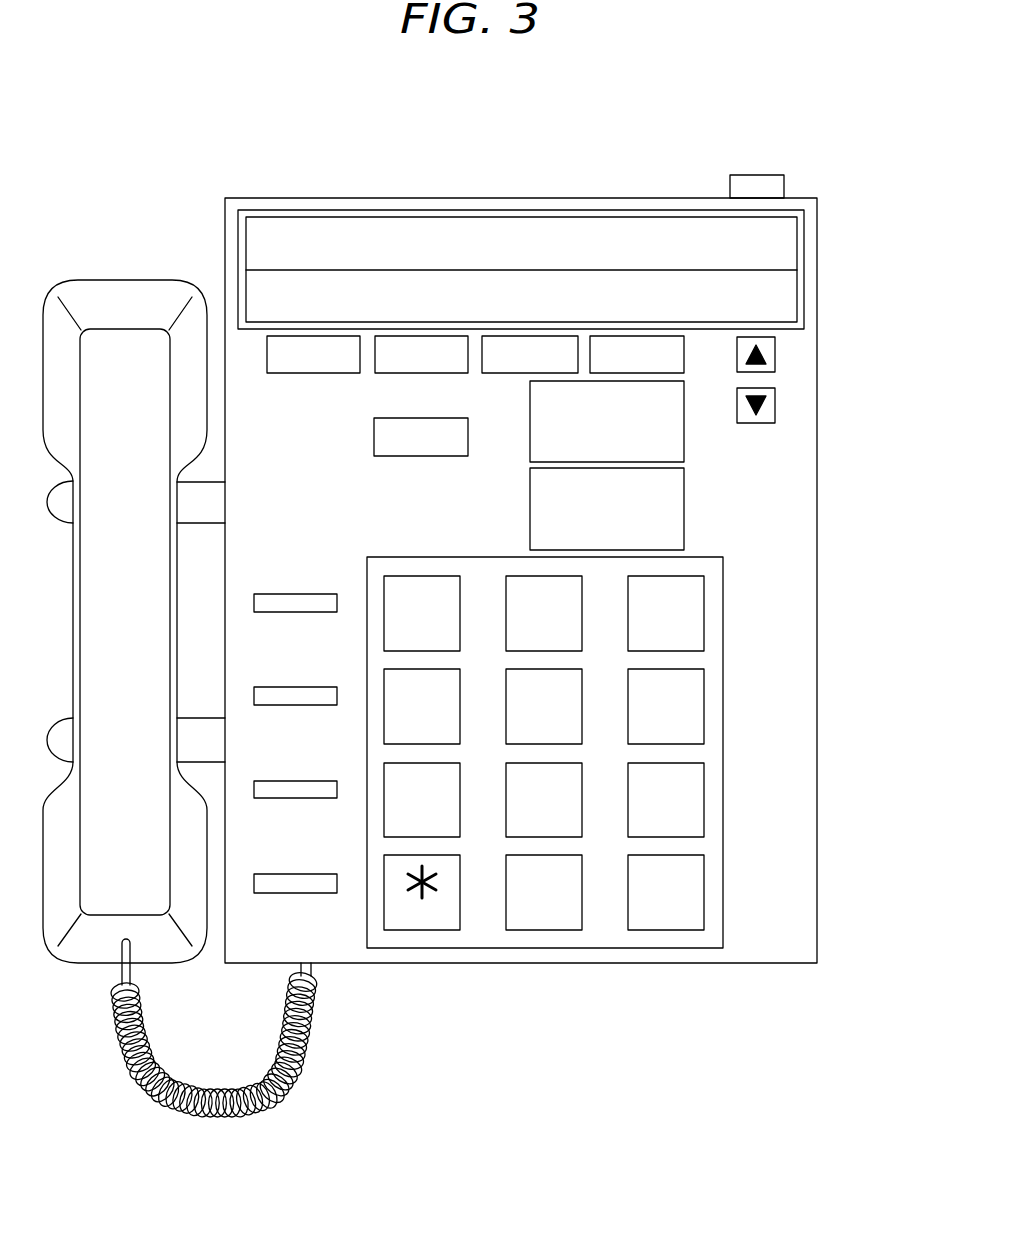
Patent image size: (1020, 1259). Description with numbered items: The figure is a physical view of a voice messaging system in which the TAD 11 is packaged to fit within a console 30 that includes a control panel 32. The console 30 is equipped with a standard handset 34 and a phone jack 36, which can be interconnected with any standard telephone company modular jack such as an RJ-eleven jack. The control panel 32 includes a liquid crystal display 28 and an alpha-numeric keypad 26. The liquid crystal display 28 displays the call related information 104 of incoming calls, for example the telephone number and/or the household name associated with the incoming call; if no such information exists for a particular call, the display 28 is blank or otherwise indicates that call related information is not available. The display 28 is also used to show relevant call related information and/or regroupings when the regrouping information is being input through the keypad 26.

The TAD 11 is at (790, 899).
The alpha-numeric keypad 26 is at (723, 712).
The liquid crystal display 28 is at (520, 213).
The console 30 is at (818, 611).
The control panel 32 is at (778, 521).
The handset 34 is at (101, 951).
The phone jack 36 is at (755, 175).
The call related information 104 is at (254, 228).